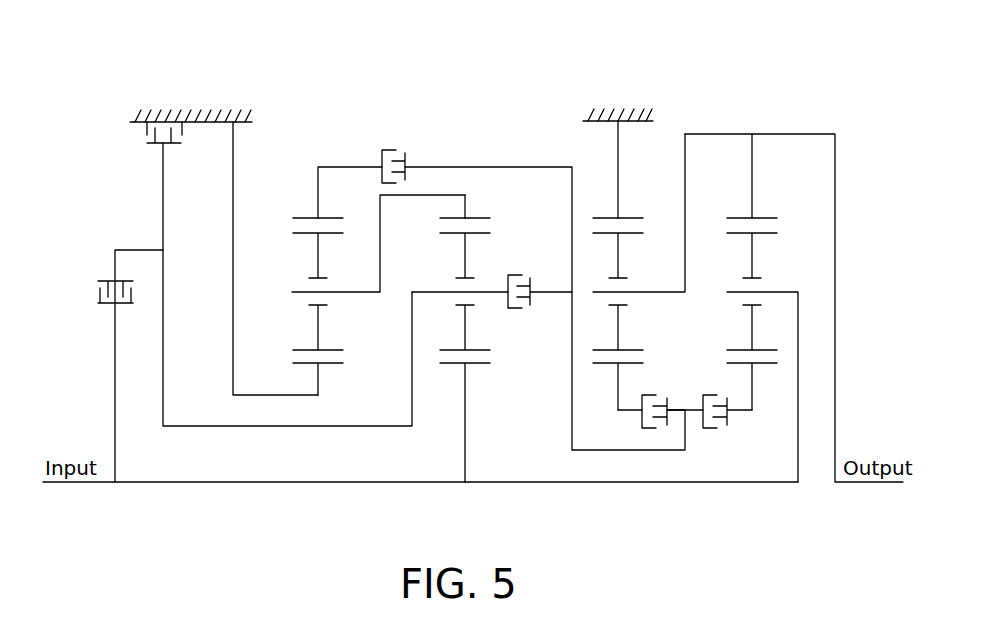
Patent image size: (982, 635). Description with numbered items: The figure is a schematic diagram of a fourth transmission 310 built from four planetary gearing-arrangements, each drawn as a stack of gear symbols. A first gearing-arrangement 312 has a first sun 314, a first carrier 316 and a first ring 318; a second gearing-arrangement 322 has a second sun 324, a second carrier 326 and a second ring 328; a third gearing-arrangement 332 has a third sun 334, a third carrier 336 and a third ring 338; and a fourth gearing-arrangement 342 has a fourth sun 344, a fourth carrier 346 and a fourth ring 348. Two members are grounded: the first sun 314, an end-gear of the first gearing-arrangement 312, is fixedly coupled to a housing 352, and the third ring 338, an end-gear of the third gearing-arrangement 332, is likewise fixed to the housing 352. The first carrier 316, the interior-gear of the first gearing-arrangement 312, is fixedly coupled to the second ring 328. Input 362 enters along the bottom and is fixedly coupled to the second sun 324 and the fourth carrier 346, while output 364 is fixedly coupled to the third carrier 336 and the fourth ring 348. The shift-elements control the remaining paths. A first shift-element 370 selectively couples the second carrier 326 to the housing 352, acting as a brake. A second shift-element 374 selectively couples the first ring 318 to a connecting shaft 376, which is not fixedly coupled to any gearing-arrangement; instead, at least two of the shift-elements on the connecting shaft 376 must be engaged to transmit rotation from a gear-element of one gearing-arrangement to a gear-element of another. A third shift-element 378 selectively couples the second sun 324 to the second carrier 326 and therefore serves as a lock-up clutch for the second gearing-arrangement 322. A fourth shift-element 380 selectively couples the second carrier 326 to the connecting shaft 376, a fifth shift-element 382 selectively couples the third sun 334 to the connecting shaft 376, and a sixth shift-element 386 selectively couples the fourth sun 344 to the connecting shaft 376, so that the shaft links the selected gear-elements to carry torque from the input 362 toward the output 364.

The fourth transmission 310 is at (134, 52).
The first gearing-arrangement 312 is at (351, 257).
The first sun 314 is at (320, 387).
The first carrier 316 is at (278, 289).
The first ring 318 is at (318, 215).
The second gearing-arrangement 322 is at (471, 349).
The second sun 324 is at (468, 388).
The second carrier 326 is at (437, 287).
The second ring 328 is at (468, 212).
The third gearing-arrangement 332 is at (605, 282).
The third sun 334 is at (617, 405).
The third carrier 336 is at (642, 287).
The third ring 338 is at (620, 190).
The fourth gearing-arrangement 342 is at (778, 328).
The fourth sun 344 is at (780, 395).
The fourth carrier 346 is at (789, 287).
The fourth ring 348 is at (753, 190).
The housing 352 is at (213, 120).
The input 362 is at (270, 484).
The output 364 is at (836, 308).
The first shift-element 370 is at (150, 146).
The second shift-element 374 is at (406, 153).
The connecting shaft 376 is at (570, 395).
The third shift-element 378 is at (100, 280).
The fourth shift-element 380 is at (538, 298).
The fifth shift-element 382 is at (667, 397).
The sixth shift-element 386 is at (701, 396).